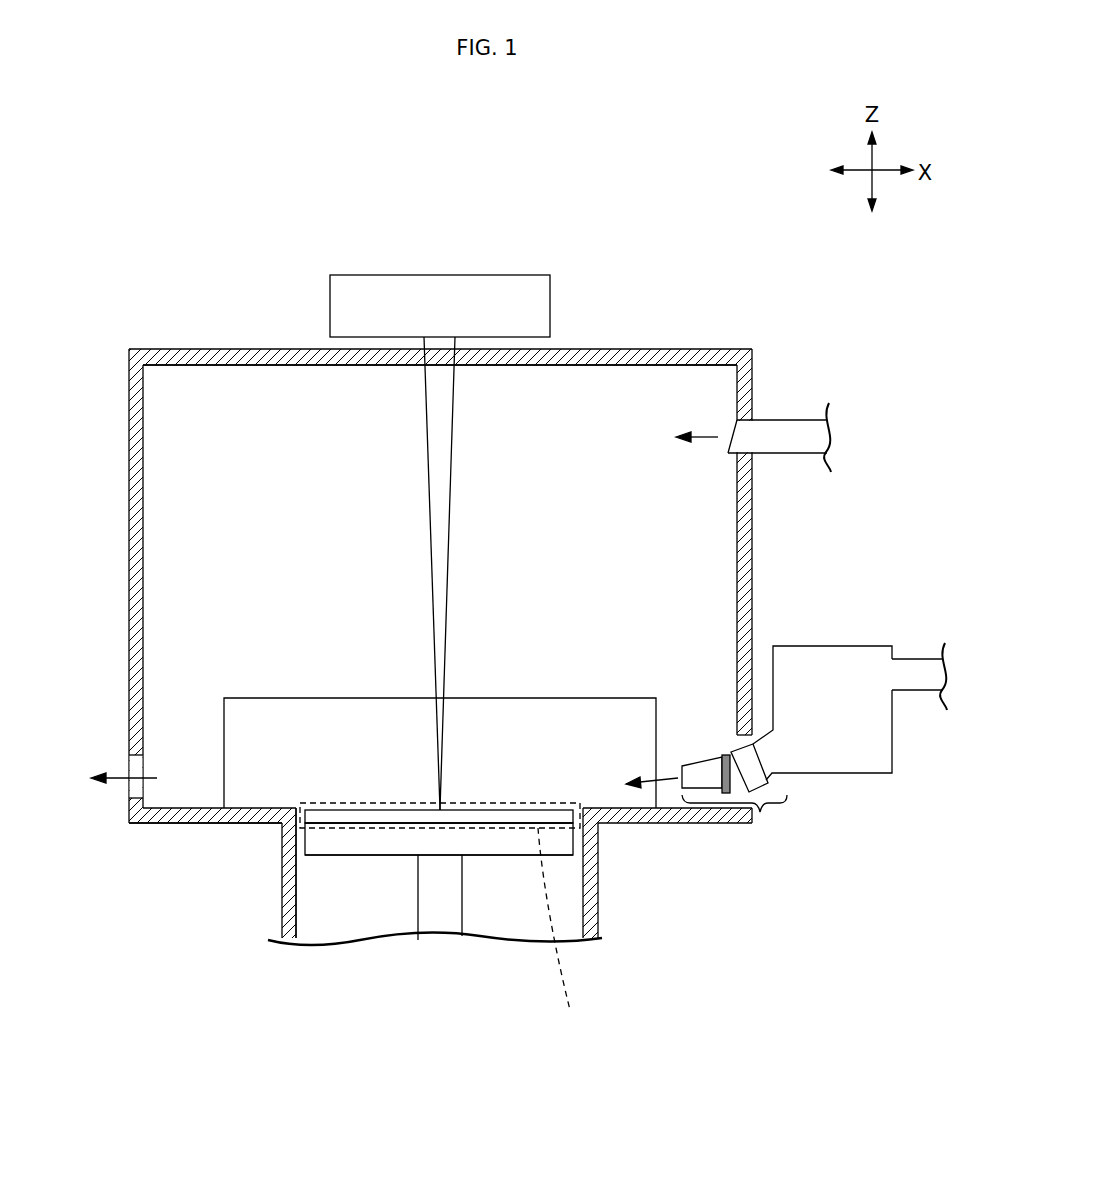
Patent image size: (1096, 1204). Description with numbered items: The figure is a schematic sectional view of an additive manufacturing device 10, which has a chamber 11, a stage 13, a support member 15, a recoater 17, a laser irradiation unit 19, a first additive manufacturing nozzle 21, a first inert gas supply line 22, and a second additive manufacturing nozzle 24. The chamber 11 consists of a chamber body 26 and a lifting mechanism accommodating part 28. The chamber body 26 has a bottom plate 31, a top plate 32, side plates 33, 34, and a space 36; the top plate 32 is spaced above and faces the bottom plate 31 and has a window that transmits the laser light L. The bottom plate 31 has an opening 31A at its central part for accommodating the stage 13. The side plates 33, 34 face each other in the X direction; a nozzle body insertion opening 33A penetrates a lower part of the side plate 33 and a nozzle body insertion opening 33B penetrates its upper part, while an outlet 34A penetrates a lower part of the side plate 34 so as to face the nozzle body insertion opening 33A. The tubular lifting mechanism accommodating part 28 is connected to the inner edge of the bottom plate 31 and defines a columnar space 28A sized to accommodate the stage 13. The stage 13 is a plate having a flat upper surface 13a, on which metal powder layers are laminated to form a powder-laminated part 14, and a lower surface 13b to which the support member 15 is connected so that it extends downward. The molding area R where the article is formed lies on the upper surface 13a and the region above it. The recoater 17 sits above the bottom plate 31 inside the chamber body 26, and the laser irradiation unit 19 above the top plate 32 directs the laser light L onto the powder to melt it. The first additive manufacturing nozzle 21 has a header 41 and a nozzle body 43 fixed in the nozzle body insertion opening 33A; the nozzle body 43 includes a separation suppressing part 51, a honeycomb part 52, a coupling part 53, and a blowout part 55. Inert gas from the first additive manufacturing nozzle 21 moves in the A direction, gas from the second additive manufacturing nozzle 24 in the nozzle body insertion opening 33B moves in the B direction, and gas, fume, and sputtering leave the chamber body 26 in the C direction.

The additive manufacturing device 10 is at (81, 236).
The chamber 11 is at (140, 885).
The stage 13 is at (344, 845).
The upper surface 13a is at (362, 822).
The lower surface 13b is at (390, 860).
The powder-laminated part 14 is at (515, 812).
The support member 15 is at (450, 893).
The recoater 17 is at (587, 712).
The laser irradiation unit 19 is at (484, 288).
The first additive manufacturing nozzle 21 is at (731, 983).
The first inert gas supply line 22 is at (920, 659).
The second additive manufacturing nozzle 24 is at (793, 432).
The chamber body 26 is at (228, 836).
The lifting mechanism accommodating part 28 is at (270, 885).
The columnar space 28A is at (310, 898).
The bottom plate 31 is at (150, 830).
The opening 31A is at (318, 800).
The top plate 32 is at (193, 352).
The side plate 33 is at (752, 565).
The nozzle body insertion opening 33A is at (757, 745).
The nozzle body insertion opening 33B is at (748, 435).
The side plate 34 is at (130, 598).
The outlet 34A is at (130, 765).
The space 36 is at (170, 463).
The header 41 is at (820, 775).
The nozzle body 43 is at (760, 812).
The separation suppressing part 51 is at (772, 773).
The honeycomb part 52 is at (762, 770).
The coupling part 53 is at (727, 773).
The blowout part 55 is at (700, 777).
The laser light L is at (438, 522).
The A direction A is at (650, 800).
The B direction B is at (702, 436).
The C direction C is at (112, 785).
The molding area R is at (556, 938).